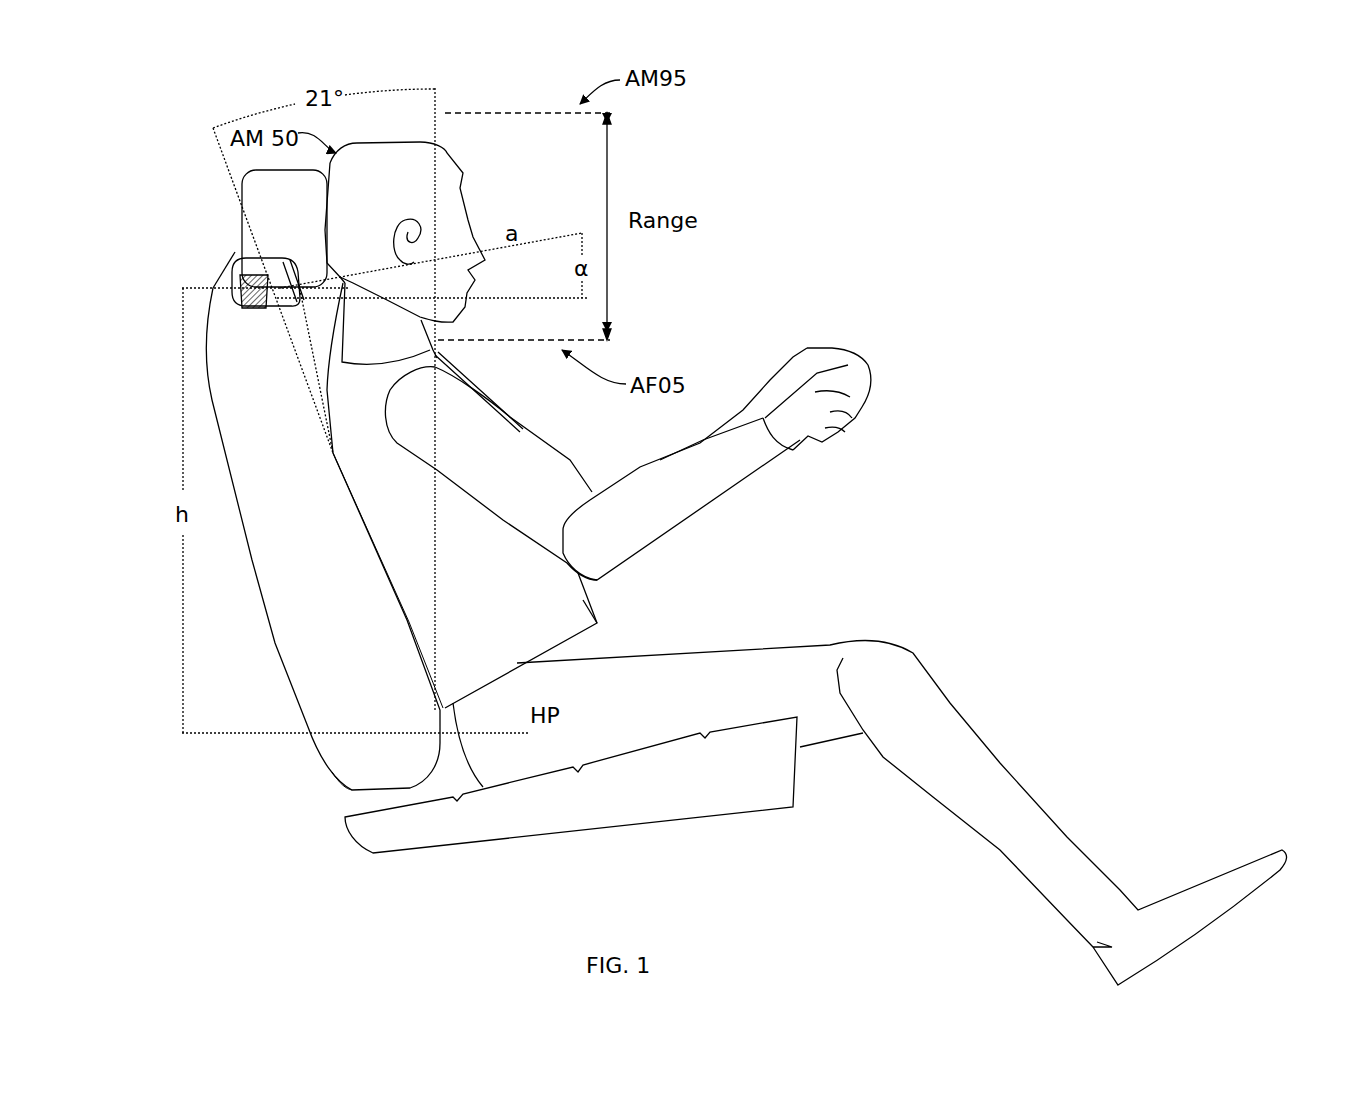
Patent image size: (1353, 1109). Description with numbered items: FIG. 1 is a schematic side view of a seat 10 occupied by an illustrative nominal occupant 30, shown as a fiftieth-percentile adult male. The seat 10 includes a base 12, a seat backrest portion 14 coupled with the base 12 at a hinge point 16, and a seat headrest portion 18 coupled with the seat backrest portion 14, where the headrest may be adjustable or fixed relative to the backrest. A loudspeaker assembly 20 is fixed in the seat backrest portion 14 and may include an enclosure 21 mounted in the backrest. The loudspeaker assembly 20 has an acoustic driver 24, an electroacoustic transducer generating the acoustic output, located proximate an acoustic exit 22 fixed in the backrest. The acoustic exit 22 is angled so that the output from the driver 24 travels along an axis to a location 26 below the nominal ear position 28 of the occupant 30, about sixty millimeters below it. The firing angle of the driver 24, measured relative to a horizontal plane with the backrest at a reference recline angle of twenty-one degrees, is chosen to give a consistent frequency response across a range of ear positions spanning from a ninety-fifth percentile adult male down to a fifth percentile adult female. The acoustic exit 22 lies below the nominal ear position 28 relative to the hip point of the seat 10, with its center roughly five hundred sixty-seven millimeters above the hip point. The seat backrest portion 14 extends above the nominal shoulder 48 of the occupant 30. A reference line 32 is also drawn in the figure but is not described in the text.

The seat 10 is at (186, 160).
The base 12 is at (332, 822).
The seat backrest portion 14 is at (257, 592).
The hinge point 16 is at (326, 791).
The seat headrest portion 18 is at (284, 228).
The loudspeaker assembly 20 is at (264, 313).
The enclosure 21 is at (249, 268).
The acoustic exit 22 is at (289, 273).
The acoustic driver 24 is at (238, 281).
The location 26 is at (393, 263).
The nominal ear position 28 is at (391, 219).
The occupant 30 is at (806, 563).
The torso line 32 is at (319, 341).
The nominal shoulder 48 is at (450, 361).